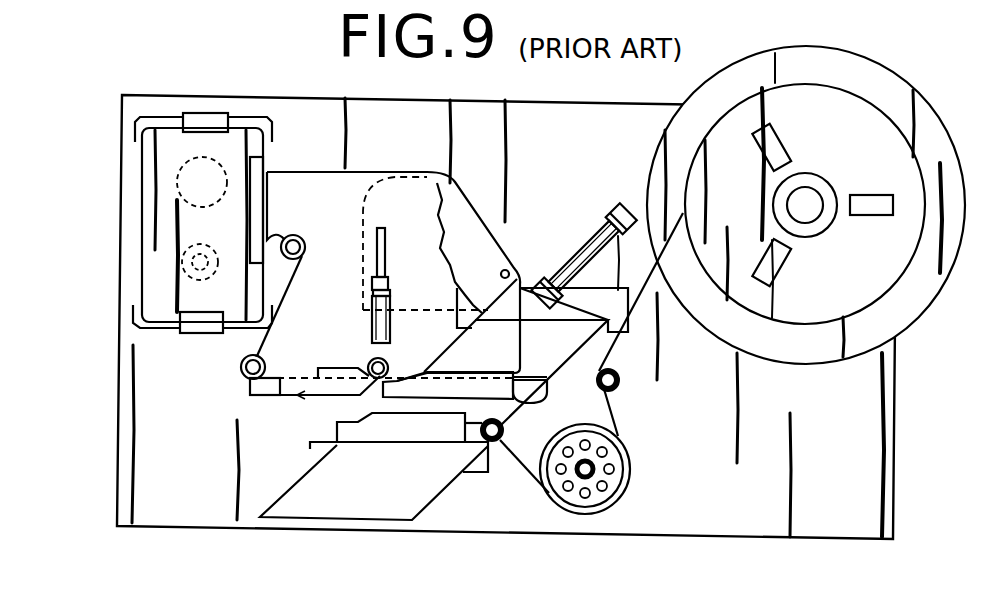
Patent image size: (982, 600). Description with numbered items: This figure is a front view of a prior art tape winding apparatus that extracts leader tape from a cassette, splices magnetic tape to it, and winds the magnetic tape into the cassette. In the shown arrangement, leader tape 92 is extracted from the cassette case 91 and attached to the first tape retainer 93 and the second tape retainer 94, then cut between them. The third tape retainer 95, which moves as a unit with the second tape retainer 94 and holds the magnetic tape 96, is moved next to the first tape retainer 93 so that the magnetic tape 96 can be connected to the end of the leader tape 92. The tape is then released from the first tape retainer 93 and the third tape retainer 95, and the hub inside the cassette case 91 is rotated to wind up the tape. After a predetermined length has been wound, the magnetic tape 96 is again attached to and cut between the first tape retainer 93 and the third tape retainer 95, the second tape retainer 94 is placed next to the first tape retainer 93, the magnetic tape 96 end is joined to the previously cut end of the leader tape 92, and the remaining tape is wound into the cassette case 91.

The cassette case 91 is at (147, 243).
The leader tape 92 is at (308, 170).
The first tape retainer 93 is at (303, 391).
The second tape retainer 94 is at (543, 398).
The third tape retainer 95 is at (391, 432).
The magnetic tape 96 is at (646, 294).